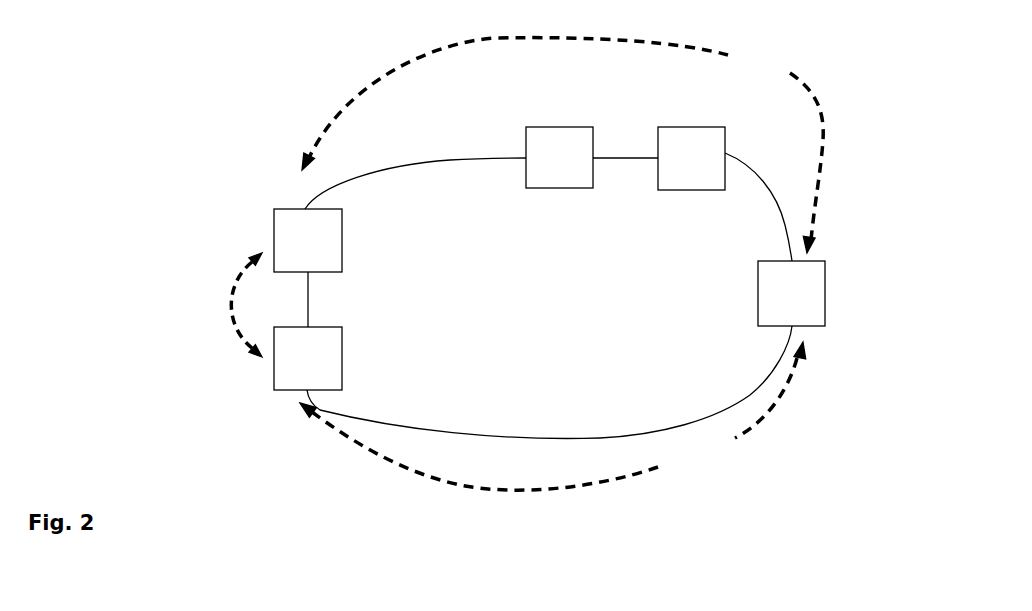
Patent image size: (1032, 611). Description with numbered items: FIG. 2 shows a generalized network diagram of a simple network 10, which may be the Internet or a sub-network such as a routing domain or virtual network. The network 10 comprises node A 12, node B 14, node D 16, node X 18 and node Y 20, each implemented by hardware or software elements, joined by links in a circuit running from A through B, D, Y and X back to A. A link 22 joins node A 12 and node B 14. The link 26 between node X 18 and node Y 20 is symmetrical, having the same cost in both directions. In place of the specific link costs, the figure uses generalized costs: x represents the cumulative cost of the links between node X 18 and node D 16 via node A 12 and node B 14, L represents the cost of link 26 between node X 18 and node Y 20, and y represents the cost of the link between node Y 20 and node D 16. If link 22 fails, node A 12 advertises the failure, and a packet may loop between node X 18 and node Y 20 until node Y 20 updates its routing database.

The network 10 is at (175, 445).
The node A 12 is at (557, 127).
The node B 14 is at (712, 150).
The node D 16 is at (825, 300).
The node X 18 is at (277, 226).
The node Y 20 is at (278, 380).
The link 22 is at (623, 158).
The link 26 is at (308, 305).